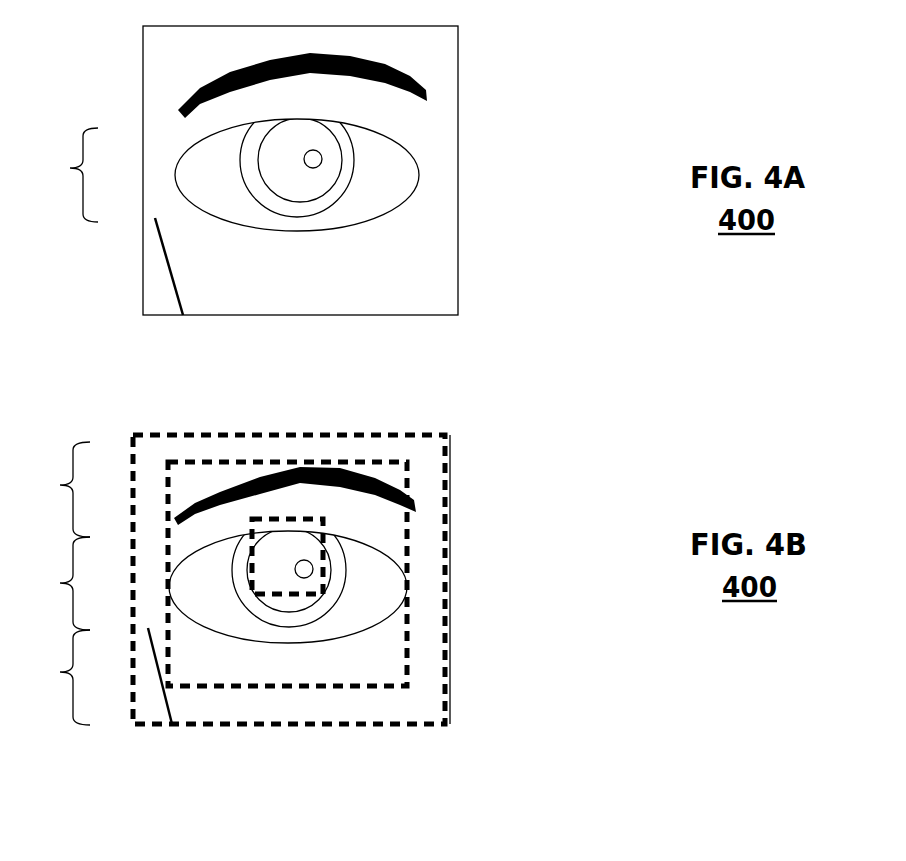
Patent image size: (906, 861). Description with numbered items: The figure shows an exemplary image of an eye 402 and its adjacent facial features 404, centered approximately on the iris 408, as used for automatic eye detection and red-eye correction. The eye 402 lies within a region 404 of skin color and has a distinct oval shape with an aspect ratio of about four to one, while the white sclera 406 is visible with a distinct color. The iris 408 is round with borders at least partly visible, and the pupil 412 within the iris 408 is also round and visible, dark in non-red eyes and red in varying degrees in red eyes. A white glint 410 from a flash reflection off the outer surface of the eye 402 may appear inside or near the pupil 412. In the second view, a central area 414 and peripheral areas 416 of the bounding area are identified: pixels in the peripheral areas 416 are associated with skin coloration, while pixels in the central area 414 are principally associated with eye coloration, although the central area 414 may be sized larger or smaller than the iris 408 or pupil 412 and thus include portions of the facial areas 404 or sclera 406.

In FIG. 4A, the eye 402 is at (64, 175).
In FIG. 4B, the eye 402 is at (55, 583).
In FIG. 4A, the adjacent facial features 404 is at (390, 270).
In FIG. 4B, the adjacent facial features 404 is at (338, 622).
In FIG. 4A, the sclera 406 is at (202, 185).
In FIG. 4B, the sclera 406 is at (390, 635).
In FIG. 4A, the iris 408 is at (338, 183).
In FIG. 4B, the iris 408 is at (330, 593).
In FIG. 4A, the white glint 410 is at (323, 160).
In FIG. 4B, the white glint 410 is at (313, 570).
In FIG. 4A, the pupil 412 is at (320, 133).
In FIG. 4B, the pupil 412 is at (313, 545).
In FIG. 4B, the central area 414 is at (408, 485).
In FIG. 4B, the peripheral areas 416 is at (425, 445).